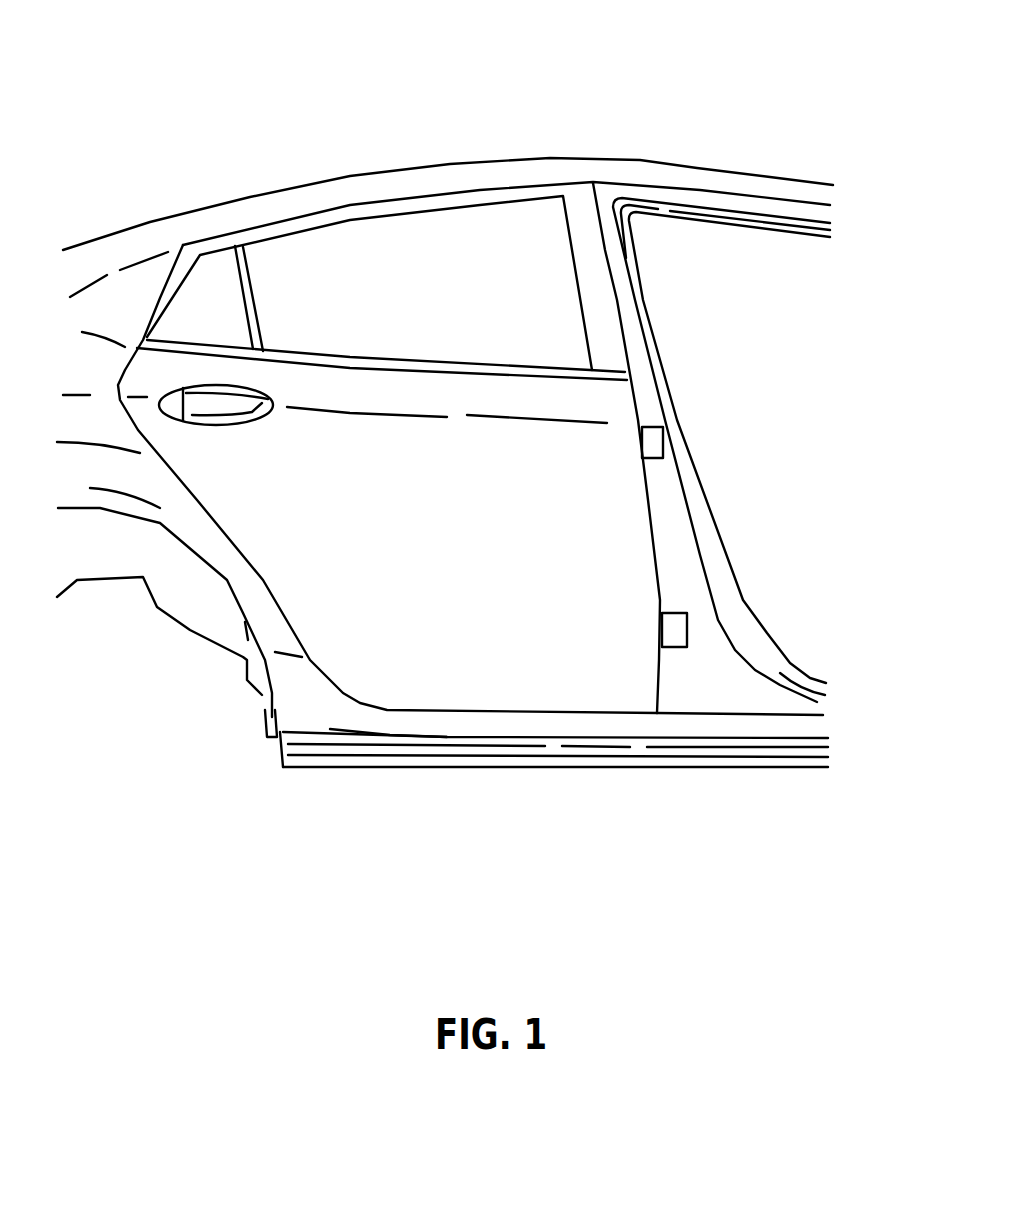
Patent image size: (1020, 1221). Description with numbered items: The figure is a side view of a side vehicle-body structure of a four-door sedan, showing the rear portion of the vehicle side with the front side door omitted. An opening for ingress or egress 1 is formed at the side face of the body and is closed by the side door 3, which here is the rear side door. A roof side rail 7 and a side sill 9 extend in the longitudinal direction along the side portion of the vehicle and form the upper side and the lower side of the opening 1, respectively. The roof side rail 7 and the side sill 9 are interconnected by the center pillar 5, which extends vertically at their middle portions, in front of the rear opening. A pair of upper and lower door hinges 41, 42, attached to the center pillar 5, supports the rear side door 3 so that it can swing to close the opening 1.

The opening for ingress or egress 1 is at (783, 497).
The side door 3 is at (460, 525).
The center pillar 5 is at (641, 382).
The roof side rail 7 is at (408, 186).
The side sill 9 is at (607, 765).
The upper door hinge 41 is at (646, 443).
The lower door hinge 42 is at (683, 633).